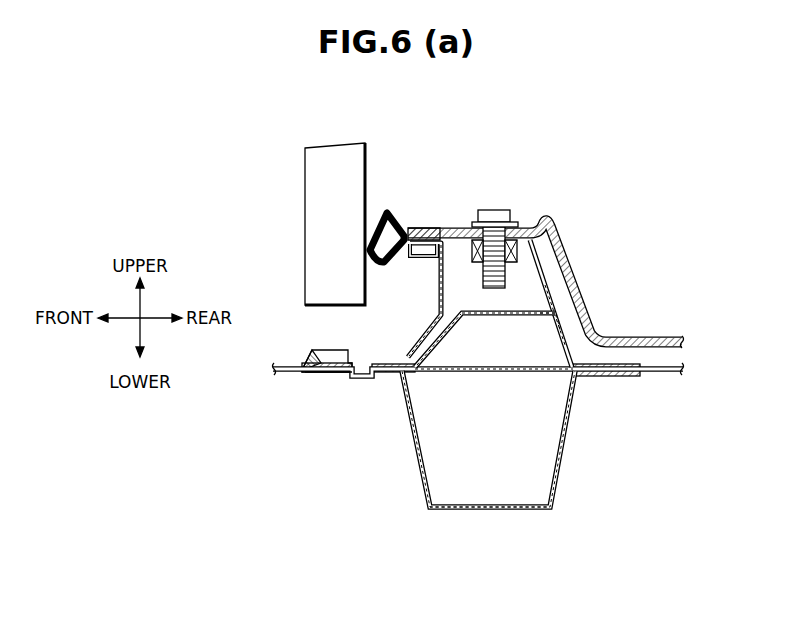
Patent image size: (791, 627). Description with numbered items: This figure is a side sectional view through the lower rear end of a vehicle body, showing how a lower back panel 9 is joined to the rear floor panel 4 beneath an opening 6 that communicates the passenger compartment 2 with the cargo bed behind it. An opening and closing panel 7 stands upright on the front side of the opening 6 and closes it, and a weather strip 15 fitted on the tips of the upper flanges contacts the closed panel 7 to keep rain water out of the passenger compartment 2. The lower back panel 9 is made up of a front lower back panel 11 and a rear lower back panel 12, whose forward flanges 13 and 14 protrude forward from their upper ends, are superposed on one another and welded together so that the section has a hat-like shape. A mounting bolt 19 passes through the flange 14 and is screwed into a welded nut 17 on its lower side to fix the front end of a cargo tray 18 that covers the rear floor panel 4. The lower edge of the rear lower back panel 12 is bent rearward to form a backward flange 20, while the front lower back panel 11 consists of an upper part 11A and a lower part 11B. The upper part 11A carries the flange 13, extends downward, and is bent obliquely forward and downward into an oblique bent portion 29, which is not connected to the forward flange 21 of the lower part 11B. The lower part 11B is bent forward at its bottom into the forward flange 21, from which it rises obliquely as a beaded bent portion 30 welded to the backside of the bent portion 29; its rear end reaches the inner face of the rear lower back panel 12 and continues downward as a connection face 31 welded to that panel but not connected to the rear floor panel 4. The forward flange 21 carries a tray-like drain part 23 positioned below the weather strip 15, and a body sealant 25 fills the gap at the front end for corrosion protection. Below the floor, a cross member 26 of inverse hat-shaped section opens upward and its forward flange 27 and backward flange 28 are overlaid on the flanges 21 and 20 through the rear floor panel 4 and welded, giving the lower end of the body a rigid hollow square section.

The passenger compartment 2 is at (375, 376).
The rear floor panel 4 is at (512, 364).
The opening 6 is at (490, 156).
The opening and closing panel 7 is at (305, 177).
The lower back panel 9 is at (565, 324).
The front lower back panel 11 is at (504, 304).
The upper part 11A is at (504, 299).
The lower part 11B is at (487, 322).
The rear lower back panel 12 is at (552, 300).
The forward flange 13 is at (434, 257).
The forward flange 14 is at (449, 228).
The weather strip 15 is at (384, 208).
The welded nut 17 is at (538, 218).
The cargo tray 18 is at (553, 250).
The mounting bolt 19 is at (500, 213).
The backward flange 20 is at (620, 344).
The forward flange 21 is at (386, 362).
The drain part 23 is at (339, 362).
The body sealant 25 is at (303, 363).
The cross member 26 is at (491, 512).
The forward flange 27 is at (328, 375).
The backward flange 28 is at (608, 378).
The oblique bent portion 29 is at (405, 254).
The bent portion 30 is at (433, 350).
The connection face 31 is at (556, 334).